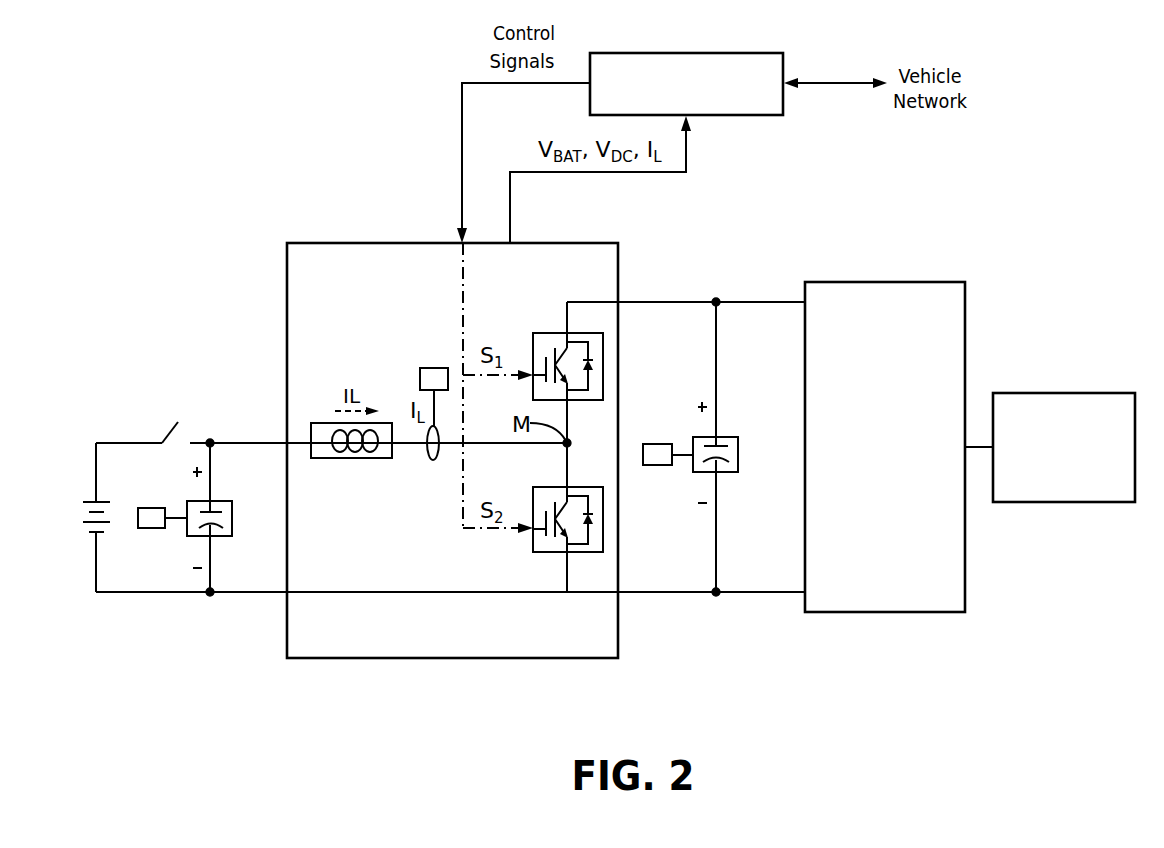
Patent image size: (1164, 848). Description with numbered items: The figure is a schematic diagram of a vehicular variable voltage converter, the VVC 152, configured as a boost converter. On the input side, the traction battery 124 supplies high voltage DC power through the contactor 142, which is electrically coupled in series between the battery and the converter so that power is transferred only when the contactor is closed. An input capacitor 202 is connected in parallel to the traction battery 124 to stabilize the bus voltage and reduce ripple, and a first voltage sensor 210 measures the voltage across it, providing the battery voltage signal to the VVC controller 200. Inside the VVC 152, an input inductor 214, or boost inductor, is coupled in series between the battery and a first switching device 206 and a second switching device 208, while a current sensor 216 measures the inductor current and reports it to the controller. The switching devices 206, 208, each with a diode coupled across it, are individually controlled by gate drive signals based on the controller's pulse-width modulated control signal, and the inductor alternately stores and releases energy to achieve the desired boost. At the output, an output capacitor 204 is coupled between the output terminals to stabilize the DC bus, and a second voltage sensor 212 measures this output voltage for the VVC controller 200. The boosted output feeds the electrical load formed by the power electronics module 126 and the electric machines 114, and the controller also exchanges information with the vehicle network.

The VVC controller 200 is at (685, 53).
The VVC 152 is at (455, 658).
The contactor 142 is at (172, 430).
The traction battery 124 is at (88, 520).
The input capacitor 202 is at (215, 501).
The first voltage sensor 210 is at (160, 508).
The input inductor 214 is at (351, 458).
The current sensor 216 is at (434, 368).
The first switching device 206 is at (550, 333).
The second switching device 208 is at (550, 487).
The second voltage sensor 212 is at (660, 444).
The output capacitor 204 is at (727, 437).
The power electronics module 126 is at (862, 282).
The electric machines 114 is at (1042, 393).